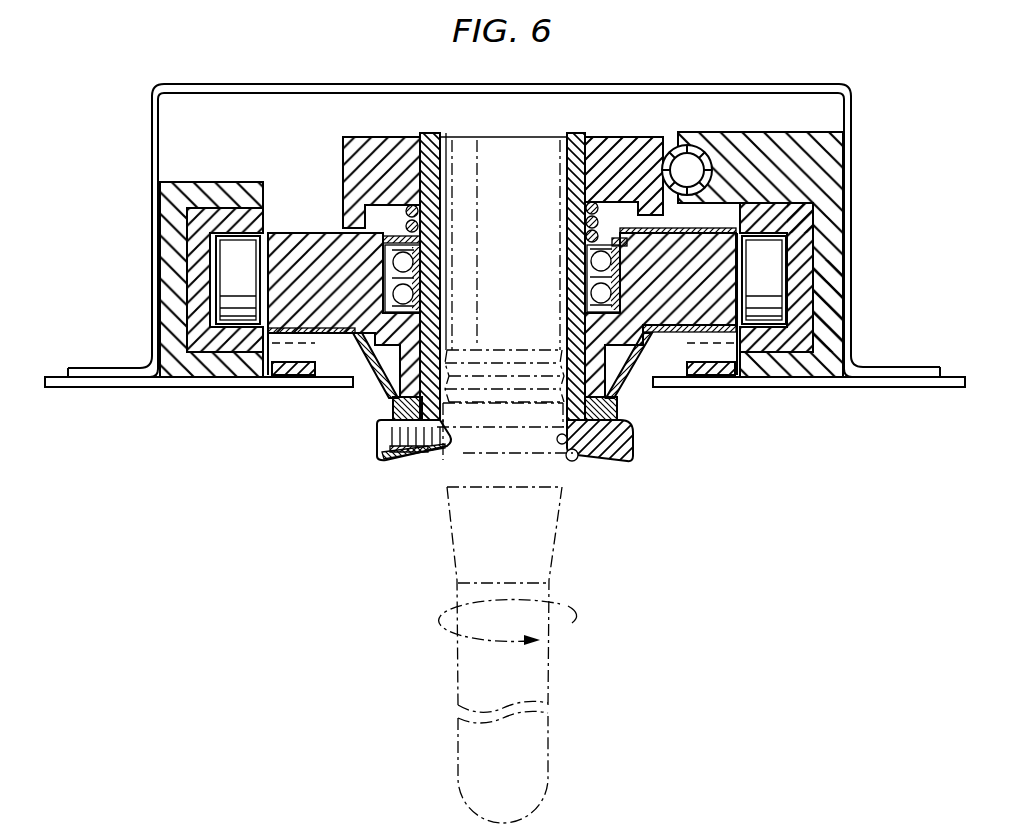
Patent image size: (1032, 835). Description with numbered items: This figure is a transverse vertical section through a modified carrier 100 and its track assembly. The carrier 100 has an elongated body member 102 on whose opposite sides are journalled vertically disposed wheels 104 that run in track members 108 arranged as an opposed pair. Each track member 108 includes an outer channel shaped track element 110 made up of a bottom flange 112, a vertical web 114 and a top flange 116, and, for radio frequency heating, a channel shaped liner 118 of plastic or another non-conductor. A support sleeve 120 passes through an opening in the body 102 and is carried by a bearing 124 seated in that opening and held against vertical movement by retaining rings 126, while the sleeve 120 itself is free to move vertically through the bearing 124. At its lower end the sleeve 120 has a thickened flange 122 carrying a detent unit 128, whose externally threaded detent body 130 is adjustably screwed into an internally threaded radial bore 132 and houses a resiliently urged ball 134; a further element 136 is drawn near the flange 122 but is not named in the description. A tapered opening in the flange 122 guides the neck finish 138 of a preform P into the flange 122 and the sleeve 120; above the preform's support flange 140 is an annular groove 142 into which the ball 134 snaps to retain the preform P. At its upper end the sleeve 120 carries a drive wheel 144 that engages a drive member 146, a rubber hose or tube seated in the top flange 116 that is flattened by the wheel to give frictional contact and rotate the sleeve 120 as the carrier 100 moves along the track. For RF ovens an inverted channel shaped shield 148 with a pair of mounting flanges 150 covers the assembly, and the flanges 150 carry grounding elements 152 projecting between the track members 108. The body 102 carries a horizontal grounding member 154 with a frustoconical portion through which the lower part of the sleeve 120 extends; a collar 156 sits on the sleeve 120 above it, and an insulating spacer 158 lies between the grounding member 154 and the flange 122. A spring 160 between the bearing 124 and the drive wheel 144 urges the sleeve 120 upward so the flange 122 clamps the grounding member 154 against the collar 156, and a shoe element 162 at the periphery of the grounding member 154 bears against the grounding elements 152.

The carrier 100 is at (318, 198).
The body member 102 is at (290, 240).
The vertically disposed wheels 104 is at (245, 275).
The track member 108 is at (172, 243).
The track element 110 is at (833, 270).
The bottom flange 112 is at (207, 378).
The vertical web 114 is at (172, 291).
The top flange 116 is at (200, 184).
The channel shaped liner 118 is at (813, 230).
The support sleeve 120 is at (566, 166).
The thickened flange 122 is at (613, 231).
The bearing 124 is at (586, 275).
The retaining rings 126 is at (630, 236).
The detent unit 128 is at (420, 455).
The detent body 130 is at (393, 465).
The radial bore 132 is at (378, 443).
The ball 134 is at (455, 447).
The detent ball 136 is at (574, 463).
The neck finish 138 is at (517, 358).
The support flange 140 is at (538, 482).
The annular groove 142 is at (494, 465).
The drive wheel 144 is at (613, 142).
The drive member 146 is at (688, 143).
The shield 148 is at (805, 82).
The mounting flanges 150 is at (85, 368).
The grounding elements 152 is at (247, 388).
The grounding member 154 is at (377, 387).
The collar 156 is at (614, 382).
The spacer 158 is at (614, 408).
The spring 160 is at (418, 209).
The shoe element 162 is at (297, 375).
The preform P is at (566, 548).